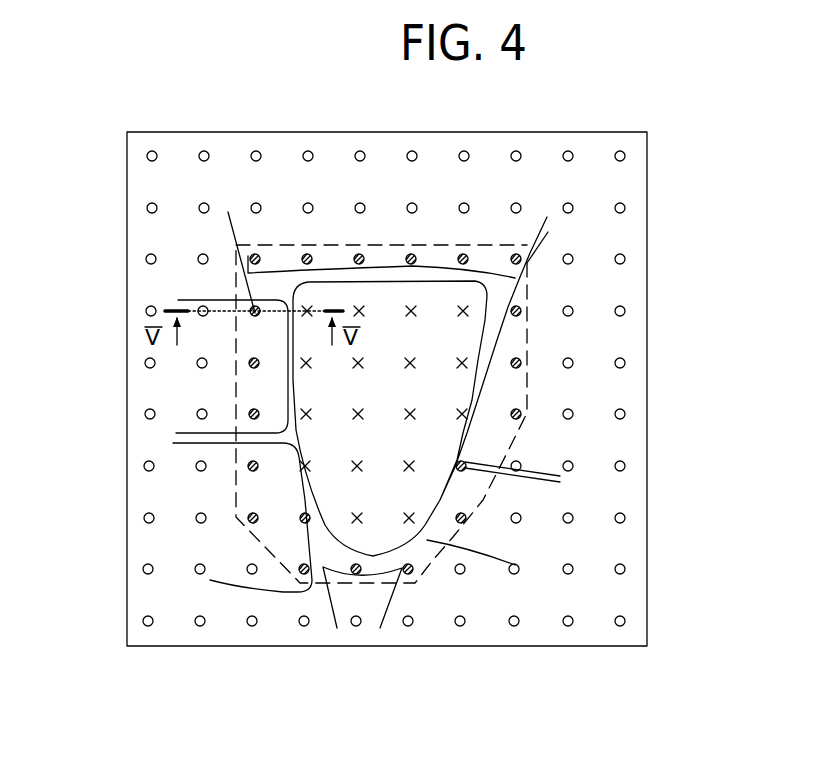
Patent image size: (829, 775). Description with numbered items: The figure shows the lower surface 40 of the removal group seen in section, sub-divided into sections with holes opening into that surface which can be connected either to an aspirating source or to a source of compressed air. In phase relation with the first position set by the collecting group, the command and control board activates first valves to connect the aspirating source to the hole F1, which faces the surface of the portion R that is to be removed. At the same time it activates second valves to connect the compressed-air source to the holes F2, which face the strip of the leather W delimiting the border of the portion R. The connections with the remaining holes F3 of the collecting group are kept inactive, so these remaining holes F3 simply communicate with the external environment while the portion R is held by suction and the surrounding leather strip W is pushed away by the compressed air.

The lower surface 40 is at (618, 184).
The strip of the leather W is at (337, 243).
The portion to be removed R is at (437, 423).
The hole F1 is at (295, 295).
The holes F2 is at (237, 310).
The remaining holes F3 is at (575, 147).